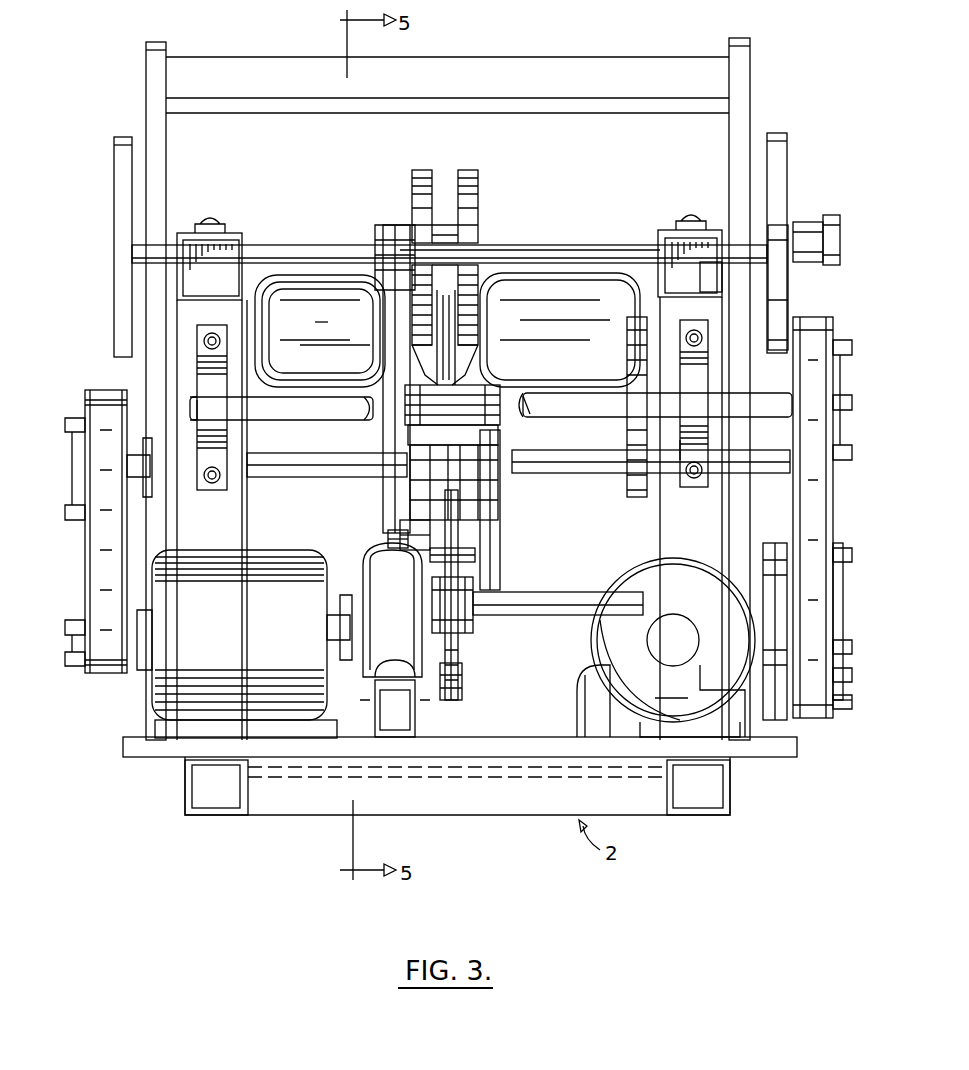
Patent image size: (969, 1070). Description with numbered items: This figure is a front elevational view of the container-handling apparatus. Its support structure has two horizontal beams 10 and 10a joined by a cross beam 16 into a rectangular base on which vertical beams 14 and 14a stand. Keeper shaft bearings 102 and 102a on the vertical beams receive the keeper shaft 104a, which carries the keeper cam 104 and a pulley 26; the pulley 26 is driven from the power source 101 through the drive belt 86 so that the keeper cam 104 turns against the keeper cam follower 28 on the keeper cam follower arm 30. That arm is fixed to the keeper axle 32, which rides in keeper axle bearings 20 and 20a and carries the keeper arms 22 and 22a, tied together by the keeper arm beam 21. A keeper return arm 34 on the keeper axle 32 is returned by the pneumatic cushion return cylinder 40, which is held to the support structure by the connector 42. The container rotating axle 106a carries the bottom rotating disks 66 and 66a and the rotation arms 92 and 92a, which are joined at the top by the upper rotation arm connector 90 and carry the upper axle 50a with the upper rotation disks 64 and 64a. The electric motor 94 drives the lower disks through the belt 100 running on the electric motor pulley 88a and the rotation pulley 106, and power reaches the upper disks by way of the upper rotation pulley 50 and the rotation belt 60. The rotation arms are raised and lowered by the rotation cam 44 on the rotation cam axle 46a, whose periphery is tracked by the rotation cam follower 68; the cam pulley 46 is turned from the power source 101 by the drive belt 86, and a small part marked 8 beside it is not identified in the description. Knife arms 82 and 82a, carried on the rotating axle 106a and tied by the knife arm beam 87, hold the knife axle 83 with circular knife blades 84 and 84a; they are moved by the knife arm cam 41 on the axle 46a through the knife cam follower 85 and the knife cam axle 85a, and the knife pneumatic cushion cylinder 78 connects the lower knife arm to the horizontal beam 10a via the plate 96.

The bolt 8 is at (838, 710).
The horizontal beam 10 is at (728, 780).
The horizontal beam 10a is at (190, 797).
The vertical beam 14 is at (700, 313).
The vertical beam 14a is at (208, 326).
The cross beam 16 is at (514, 800).
The keeper axle bearing 20 is at (686, 222).
The keeper axle bearing 20a is at (215, 222).
The keeper arm beam 21 is at (248, 270).
The keeper arm 22 is at (778, 166).
The keeper arm 22a is at (124, 185).
The pulley 26 is at (835, 475).
The keeper cam follower 28 is at (660, 470).
The keeper cam follower arm 30 is at (620, 290).
The keeper axle 32 is at (500, 255).
The keeper return arm 34 is at (384, 340).
The pneumatic cushion return cylinder 40 is at (378, 640).
The knife arm cam 41 is at (458, 690).
The connector 42 is at (360, 745).
The rotation cam 44 is at (674, 640).
The cam pulley 46 is at (843, 600).
The rotation cam axle 46a is at (562, 612).
The upper rotation pulley 50 is at (828, 222).
The upper axle 50a is at (740, 250).
The rotation belt 60 is at (808, 304).
The upper rotation disk 64 is at (464, 178).
The upper rotation disk 64a is at (422, 178).
The bottom rotating disk 66 is at (470, 555).
The bottom rotating disk 66a is at (420, 548).
The rotation cam follower 68 is at (780, 550).
The knife pneumatic cushion cylinder 78 is at (598, 690).
The knife arm 82 is at (490, 516).
The knife arm 82a is at (405, 490).
The knife axle 83 is at (470, 375).
The circular knife blade 84 is at (463, 400).
The circular knife blade 84a is at (418, 418).
The knife cam follower 85 is at (475, 565).
The knife cam axle 85a is at (400, 540).
The drive belt 86 is at (830, 497).
The knife arm beam 87 is at (462, 660).
The electric motor pulley 88a is at (88, 662).
The upper rotation arm connector 90 is at (447, 72).
The rotation arm 92 is at (740, 70).
The rotation arm 92a is at (152, 70).
The electric motor 94 is at (190, 665).
The plate 96 is at (608, 772).
The belt 100 is at (105, 574).
The power source 101 is at (673, 656).
The keeper shaft bearing 102 is at (692, 373).
The keeper shaft bearing 102a is at (208, 382).
The keeper cam 104 is at (630, 480).
The keeper shaft 104a is at (310, 410).
The rotation pulley 106 is at (88, 402).
The container rotating axle 106a is at (270, 470).